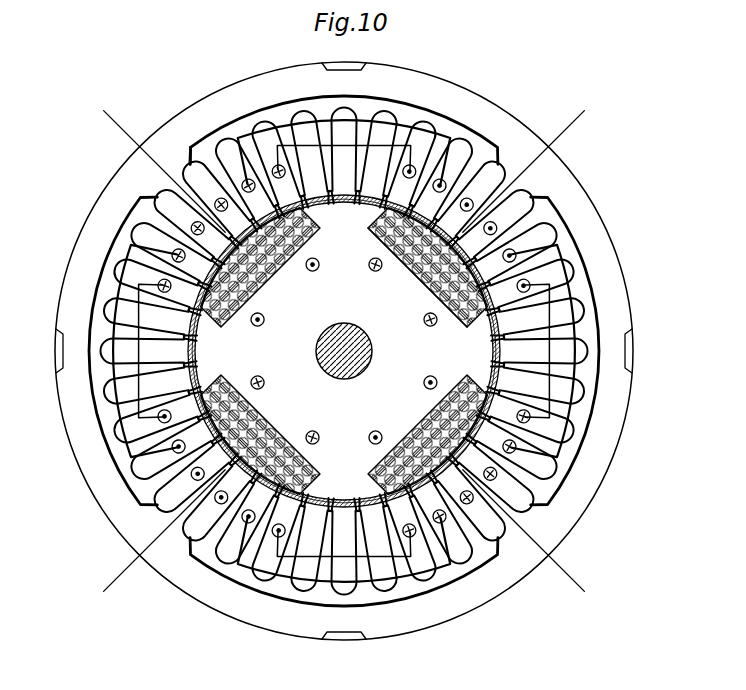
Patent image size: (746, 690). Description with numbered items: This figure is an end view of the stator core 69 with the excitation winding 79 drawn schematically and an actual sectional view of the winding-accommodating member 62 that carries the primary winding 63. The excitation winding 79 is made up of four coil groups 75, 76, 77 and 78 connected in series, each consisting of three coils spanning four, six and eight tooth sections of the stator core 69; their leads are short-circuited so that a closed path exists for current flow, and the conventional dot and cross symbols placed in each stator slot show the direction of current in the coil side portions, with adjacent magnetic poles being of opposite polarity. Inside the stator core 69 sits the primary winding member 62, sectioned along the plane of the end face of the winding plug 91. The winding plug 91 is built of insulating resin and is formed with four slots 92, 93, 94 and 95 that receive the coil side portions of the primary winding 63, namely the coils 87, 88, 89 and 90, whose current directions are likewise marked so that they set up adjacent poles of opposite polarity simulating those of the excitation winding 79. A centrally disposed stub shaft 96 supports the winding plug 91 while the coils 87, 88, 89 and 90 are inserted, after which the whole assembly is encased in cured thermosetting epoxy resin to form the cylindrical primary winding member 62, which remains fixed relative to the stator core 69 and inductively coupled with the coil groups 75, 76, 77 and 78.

The winding-accommodating member 62 is at (398, 376).
The primary winding 63 is at (427, 295).
The stator core 69 is at (510, 110).
The coil group 75 is at (405, 104).
The coil group 76 is at (598, 317).
The coil group 77 is at (412, 600).
The coil group 78 is at (95, 405).
The excitation winding 79 is at (207, 127).
The coil 87 is at (322, 212).
The coil 88 is at (476, 318).
The coil 89 is at (354, 489).
The coil 90 is at (213, 318).
The winding plug 91 is at (369, 205).
The slot 92 is at (412, 262).
The slot 93 is at (416, 412).
The slot 94 is at (272, 427).
The slot 95 is at (277, 268).
The stub shaft 96 is at (344, 324).